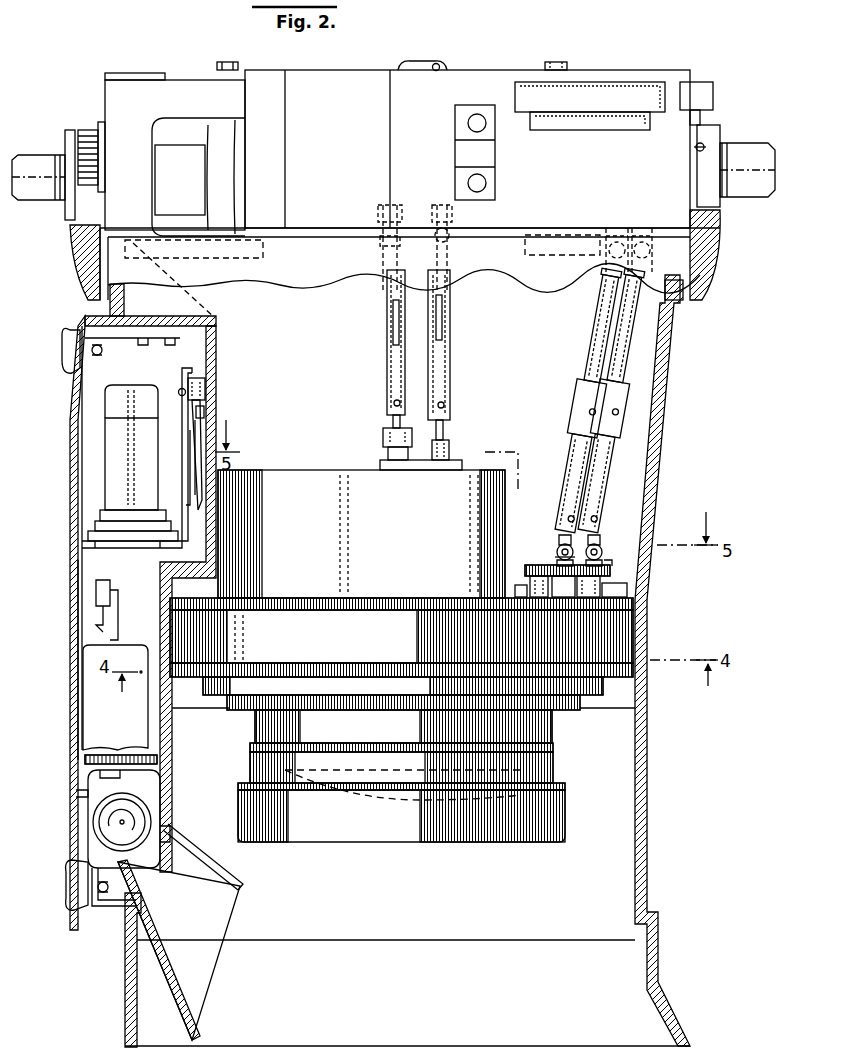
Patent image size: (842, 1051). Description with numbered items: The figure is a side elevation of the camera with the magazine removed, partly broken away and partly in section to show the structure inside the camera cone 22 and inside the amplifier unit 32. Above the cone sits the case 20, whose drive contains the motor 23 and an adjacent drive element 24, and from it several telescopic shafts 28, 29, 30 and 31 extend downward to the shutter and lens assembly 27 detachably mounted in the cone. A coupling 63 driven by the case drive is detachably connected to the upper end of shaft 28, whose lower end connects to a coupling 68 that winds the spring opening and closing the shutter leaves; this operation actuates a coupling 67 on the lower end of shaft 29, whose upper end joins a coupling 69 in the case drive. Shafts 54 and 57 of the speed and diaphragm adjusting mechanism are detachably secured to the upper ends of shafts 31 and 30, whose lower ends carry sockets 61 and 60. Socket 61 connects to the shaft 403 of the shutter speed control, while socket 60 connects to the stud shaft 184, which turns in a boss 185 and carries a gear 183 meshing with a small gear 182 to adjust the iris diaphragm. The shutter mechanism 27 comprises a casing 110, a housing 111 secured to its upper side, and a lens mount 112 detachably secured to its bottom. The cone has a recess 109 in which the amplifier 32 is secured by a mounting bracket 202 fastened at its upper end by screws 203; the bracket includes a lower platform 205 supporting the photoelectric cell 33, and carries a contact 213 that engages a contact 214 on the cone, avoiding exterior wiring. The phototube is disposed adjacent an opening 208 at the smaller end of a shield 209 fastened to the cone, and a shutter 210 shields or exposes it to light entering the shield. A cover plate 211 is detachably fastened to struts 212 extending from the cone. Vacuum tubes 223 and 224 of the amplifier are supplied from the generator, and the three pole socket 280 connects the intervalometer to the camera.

The case 20 is at (693, 58).
The cone 22 is at (655, 790).
The motor 23 is at (307, 76).
The motor 24 is at (185, 130).
The shutter and lens assembly 27 is at (572, 710).
The telescopic shaft 28 is at (395, 353).
The telescopic shaft 29 is at (442, 378).
The telescopic shaft 30 is at (586, 408).
The telescopic shaft 31 is at (612, 452).
The amplifier unit 32 is at (90, 520).
The photoelectric cell 33 is at (90, 822).
The shaft 54 is at (648, 241).
The shaft 57 is at (617, 241).
The socket 60 is at (565, 538).
The socket 61 is at (600, 540).
The coupling 63 is at (383, 240).
The coupling 67 is at (455, 457).
The coupling 68 is at (385, 437).
The coupling 69 is at (457, 232).
The recess 109 is at (188, 345).
The casing 110 is at (240, 644).
The housing 111 is at (318, 505).
The lens mount 112 is at (430, 832).
The small gear 182 is at (527, 569).
The gear 183 is at (567, 598).
The stud shaft 184 is at (558, 556).
The boss 185 is at (548, 598).
The mounting bracket 202 is at (123, 548).
The screws 203 is at (182, 392).
The lower platform 205 is at (152, 760).
The opening 208 is at (168, 836).
The shield 209 is at (198, 972).
The shutter 210 is at (148, 846).
The cover plate 211 is at (72, 633).
The struts 212 is at (106, 340).
The contact 213 is at (196, 427).
The contact 214 is at (203, 412).
The vacuum tube 223 is at (115, 442).
The vacuum tube 224 is at (115, 398).
The three pole socket 280 is at (105, 125).
The shaft 403 is at (621, 560).